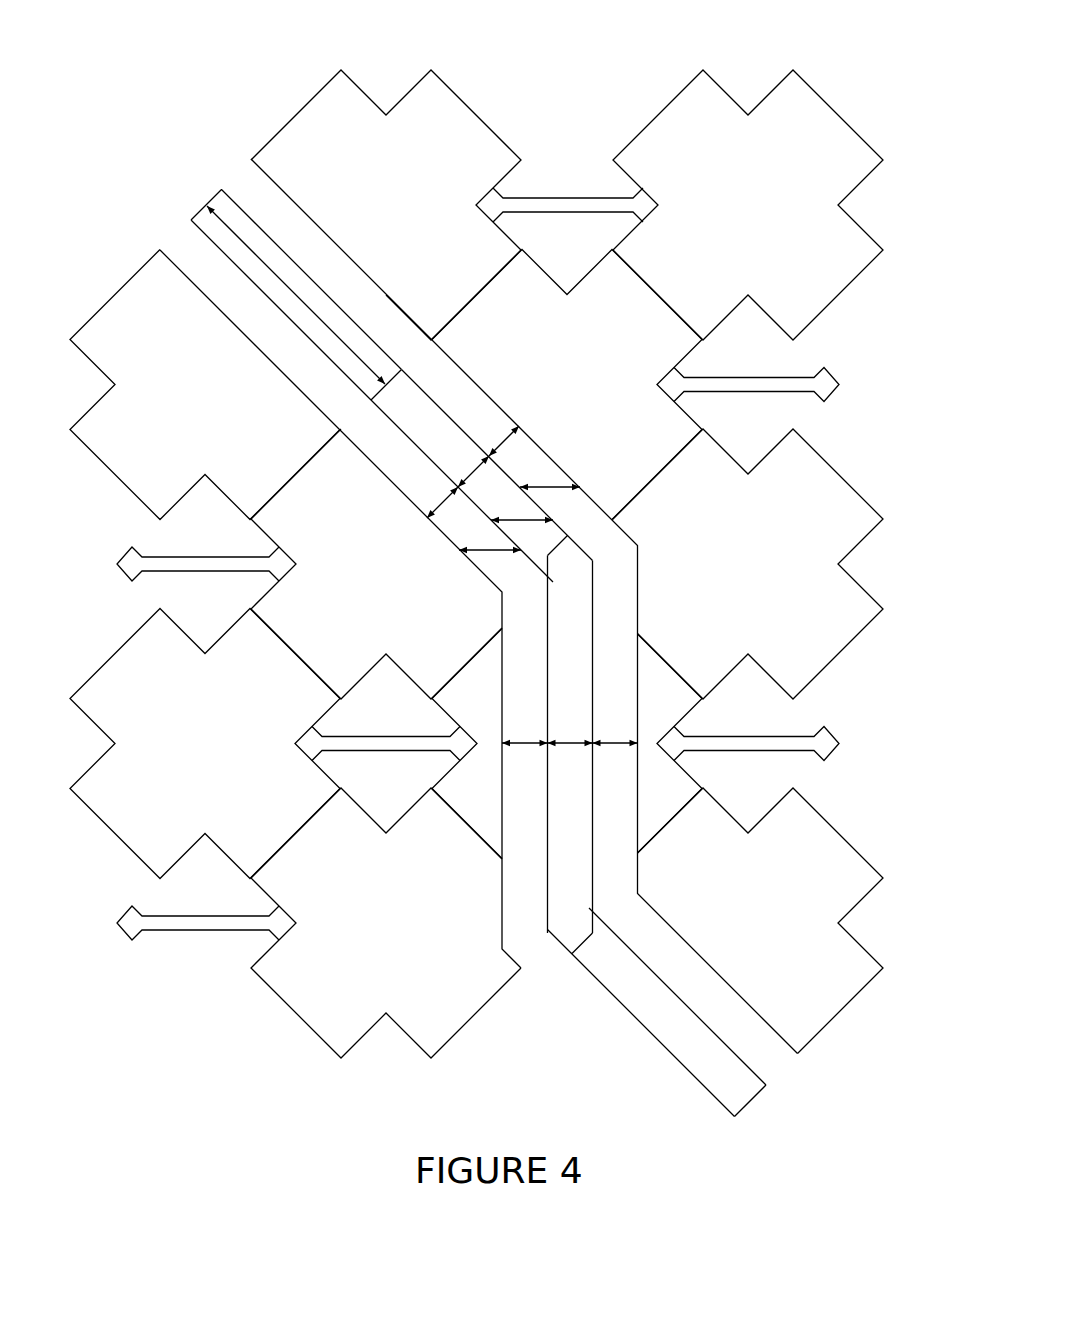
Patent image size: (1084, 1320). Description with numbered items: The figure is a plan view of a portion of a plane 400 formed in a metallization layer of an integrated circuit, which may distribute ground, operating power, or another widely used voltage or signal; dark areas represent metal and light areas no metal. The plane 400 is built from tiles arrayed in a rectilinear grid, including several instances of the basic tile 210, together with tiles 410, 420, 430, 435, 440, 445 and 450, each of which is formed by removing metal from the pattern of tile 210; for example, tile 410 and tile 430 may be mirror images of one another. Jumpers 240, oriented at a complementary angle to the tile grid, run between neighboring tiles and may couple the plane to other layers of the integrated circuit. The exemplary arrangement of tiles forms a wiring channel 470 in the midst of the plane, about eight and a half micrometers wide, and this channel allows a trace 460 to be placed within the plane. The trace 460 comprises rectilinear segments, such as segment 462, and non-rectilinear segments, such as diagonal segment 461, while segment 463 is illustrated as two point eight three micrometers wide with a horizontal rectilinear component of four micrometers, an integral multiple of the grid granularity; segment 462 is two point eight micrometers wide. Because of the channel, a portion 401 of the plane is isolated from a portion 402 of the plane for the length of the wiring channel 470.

The plane 400 is at (580, 94).
The tile 410 is at (425, 198).
The tile 210 is at (770, 209).
The tile 430 is at (232, 414).
The tile 435 is at (405, 598).
The tile 420 is at (775, 568).
The tile 440 is at (496, 707).
The tile 445 is at (688, 708).
The tile 450 is at (410, 938).
The wiring channel 470 is at (188, 253).
The segment of trace 463 is at (428, 432).
The rectilinear segment 462 is at (595, 830).
The trace 460 is at (627, 1020).
The diagonal segment 461 is at (775, 1079).
The portion of plane 402 is at (880, 437).
The jumper 240 is at (850, 745).
The portion of plane 401 is at (290, 1017).